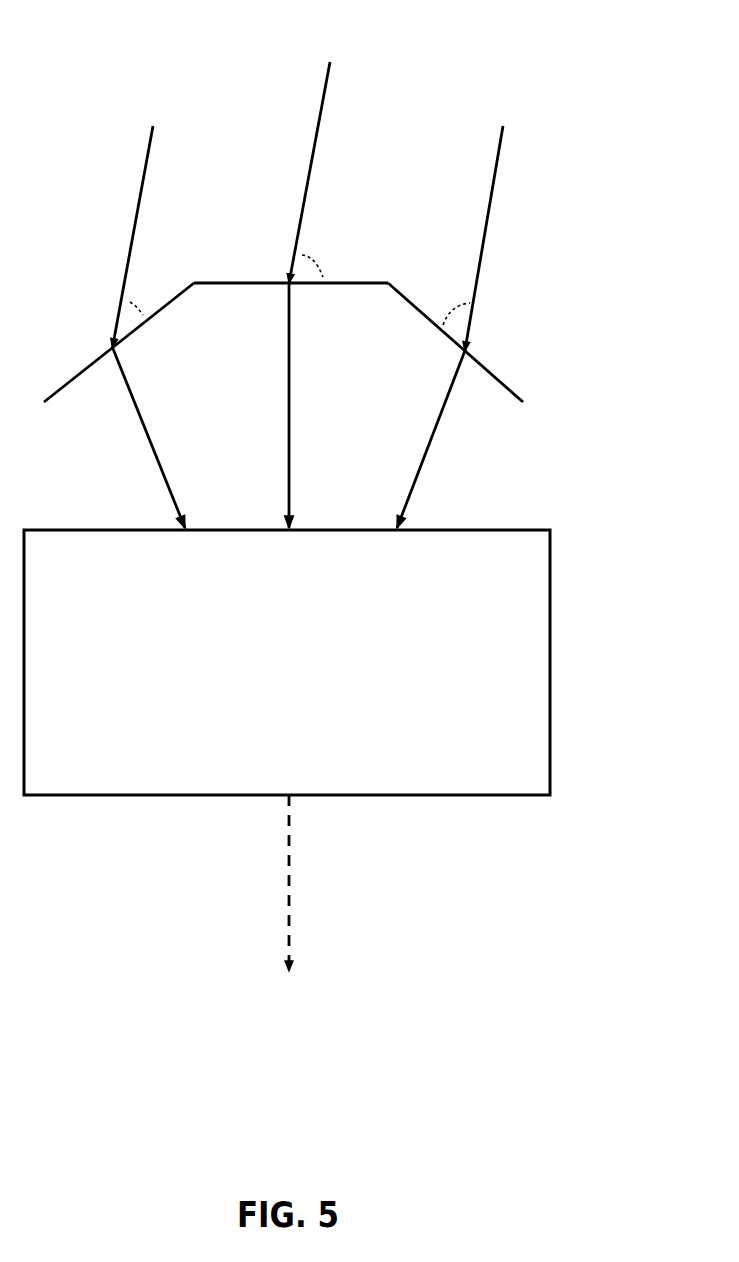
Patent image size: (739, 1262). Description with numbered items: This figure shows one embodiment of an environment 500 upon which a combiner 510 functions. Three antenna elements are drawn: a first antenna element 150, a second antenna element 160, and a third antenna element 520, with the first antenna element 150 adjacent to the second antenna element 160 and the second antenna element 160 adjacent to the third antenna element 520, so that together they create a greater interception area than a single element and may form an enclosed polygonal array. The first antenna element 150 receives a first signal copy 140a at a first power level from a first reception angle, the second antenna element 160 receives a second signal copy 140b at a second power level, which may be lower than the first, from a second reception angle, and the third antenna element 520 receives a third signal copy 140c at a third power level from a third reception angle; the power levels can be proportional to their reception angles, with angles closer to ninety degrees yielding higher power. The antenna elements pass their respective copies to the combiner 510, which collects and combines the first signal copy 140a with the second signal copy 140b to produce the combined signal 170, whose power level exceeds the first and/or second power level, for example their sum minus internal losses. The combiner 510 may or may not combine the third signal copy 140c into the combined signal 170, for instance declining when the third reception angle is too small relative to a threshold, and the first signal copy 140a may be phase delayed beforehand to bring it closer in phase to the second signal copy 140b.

The environment 500 is at (292, 53).
The first signal copy 140a is at (143, 177).
The second signal copy 140b is at (310, 178).
The third signal copy 140c is at (500, 165).
The first antenna element 150 is at (168, 303).
The second antenna element 160 is at (362, 282).
The third antenna element 520 is at (482, 365).
The combiner 510 is at (552, 652).
The combined signal 170 is at (291, 881).